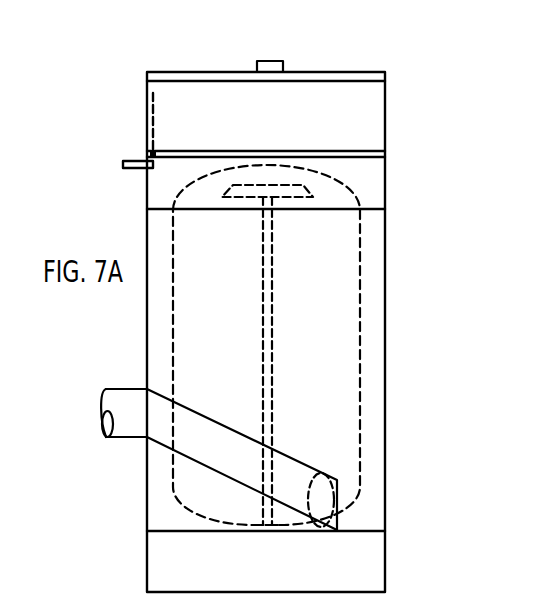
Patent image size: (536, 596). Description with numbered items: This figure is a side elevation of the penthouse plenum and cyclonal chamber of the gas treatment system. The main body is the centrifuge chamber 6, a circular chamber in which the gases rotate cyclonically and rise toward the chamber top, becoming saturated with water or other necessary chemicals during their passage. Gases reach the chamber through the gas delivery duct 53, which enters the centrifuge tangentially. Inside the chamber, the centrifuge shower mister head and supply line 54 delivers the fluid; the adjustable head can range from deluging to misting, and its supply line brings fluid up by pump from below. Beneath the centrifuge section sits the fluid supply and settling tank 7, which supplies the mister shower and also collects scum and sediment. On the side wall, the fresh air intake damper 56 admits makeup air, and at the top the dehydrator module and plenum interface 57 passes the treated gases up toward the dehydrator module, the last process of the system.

The centrifuge chamber 6 is at (330, 296).
The fluid supply and settling tank 7 is at (338, 558).
The gas delivery duct 53 is at (160, 420).
The centrifuge shower mister head and supply line 54 is at (298, 194).
The fresh air intake damper 56 is at (147, 124).
The dehydrator module and plenum interface 57 is at (283, 64).